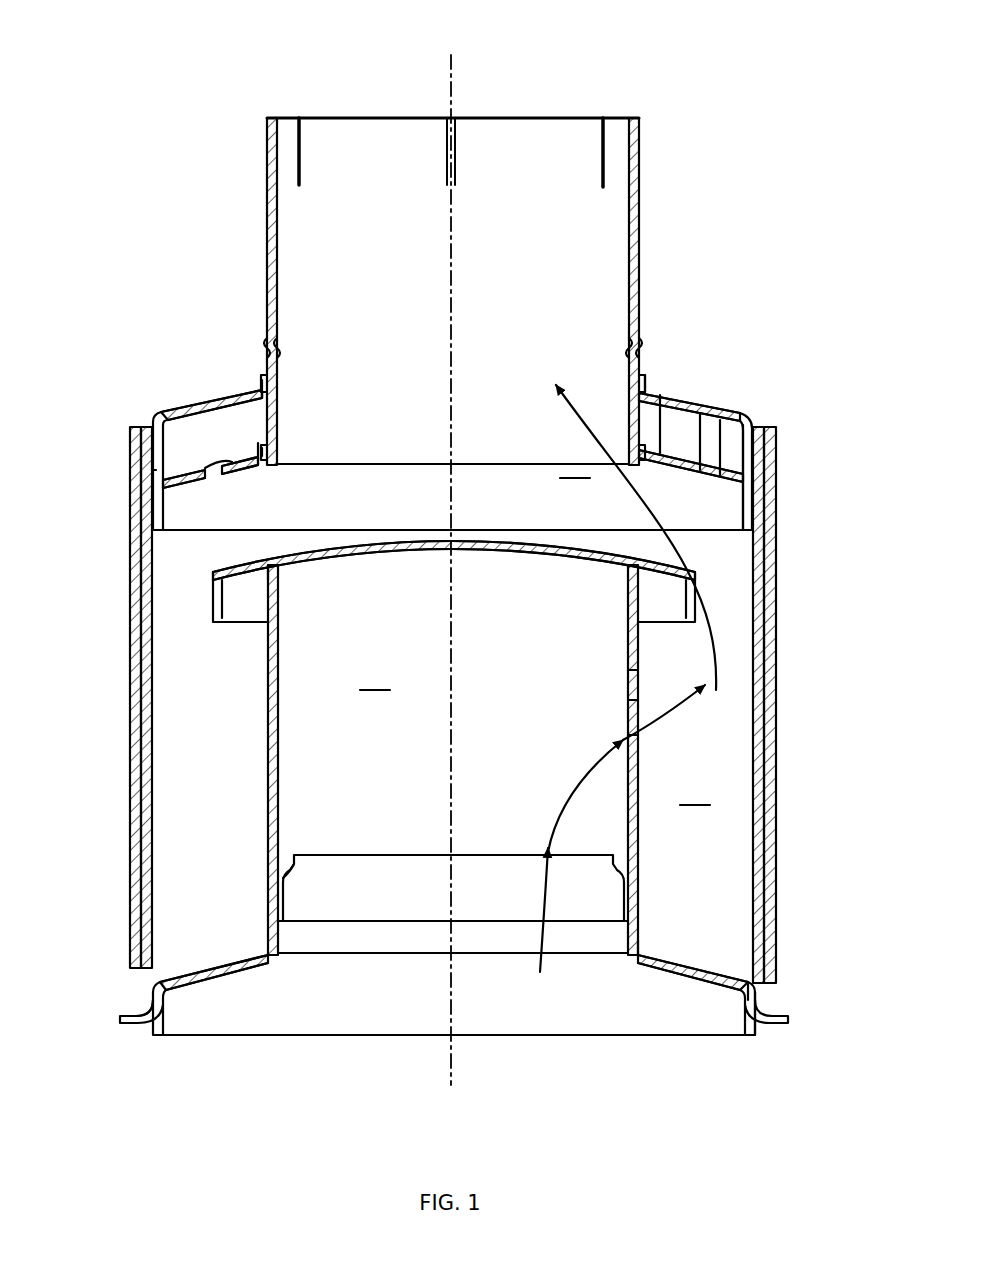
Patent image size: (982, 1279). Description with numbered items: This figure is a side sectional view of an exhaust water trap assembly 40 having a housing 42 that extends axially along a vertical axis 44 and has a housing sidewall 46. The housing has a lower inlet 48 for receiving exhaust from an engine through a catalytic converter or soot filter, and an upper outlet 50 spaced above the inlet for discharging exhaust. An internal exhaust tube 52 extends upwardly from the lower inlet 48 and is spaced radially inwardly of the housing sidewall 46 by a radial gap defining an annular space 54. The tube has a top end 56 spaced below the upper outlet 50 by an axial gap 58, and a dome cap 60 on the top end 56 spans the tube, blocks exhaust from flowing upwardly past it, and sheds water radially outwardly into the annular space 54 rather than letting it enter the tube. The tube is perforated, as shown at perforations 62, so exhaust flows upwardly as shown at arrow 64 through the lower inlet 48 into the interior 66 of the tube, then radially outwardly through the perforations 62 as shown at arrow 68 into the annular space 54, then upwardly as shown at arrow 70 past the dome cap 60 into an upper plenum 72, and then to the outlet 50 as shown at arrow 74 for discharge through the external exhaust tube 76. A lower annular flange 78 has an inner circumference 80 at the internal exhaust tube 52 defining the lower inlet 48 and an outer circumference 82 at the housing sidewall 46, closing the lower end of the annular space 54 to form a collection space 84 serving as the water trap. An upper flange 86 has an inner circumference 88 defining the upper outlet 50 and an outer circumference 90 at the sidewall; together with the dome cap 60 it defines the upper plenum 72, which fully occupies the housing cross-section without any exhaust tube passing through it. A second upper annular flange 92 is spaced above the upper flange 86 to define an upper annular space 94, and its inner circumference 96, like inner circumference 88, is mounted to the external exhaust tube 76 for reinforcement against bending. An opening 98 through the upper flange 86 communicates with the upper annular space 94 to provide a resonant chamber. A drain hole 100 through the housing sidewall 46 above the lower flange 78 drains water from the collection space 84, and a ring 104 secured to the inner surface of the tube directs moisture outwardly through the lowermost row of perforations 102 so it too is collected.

The exhaust water trap assembly 40 is at (100, 403).
The housing 42 is at (165, 405).
The vertical axis 44 is at (455, 76).
The housing sidewall 46 is at (128, 712).
The lower inlet 48 is at (280, 975).
The upper outlet 50 is at (290, 468).
The internal exhaust tube 52 is at (268, 824).
The annular space 54 is at (695, 820).
The top end 56 is at (283, 566).
The axial gap 58 is at (300, 481).
The dome cap 60 is at (335, 526).
The perforations 62 is at (628, 735).
The arrow 64 is at (545, 843).
The interior 66 is at (375, 705).
The arrow 68 is at (578, 763).
The arrow 70 is at (690, 700).
The upper plenum 72 is at (575, 494).
The arrow 74 is at (555, 398).
The external exhaust tube 76 is at (642, 226).
The lower annular flange 78 is at (698, 978).
The inner circumference 80 is at (645, 948).
The outer circumference 82 is at (740, 978).
The collection space 84 is at (735, 953).
The upper flange 86 is at (725, 453).
The inner circumference 88 is at (700, 428).
The outer circumference 90 is at (752, 416).
The second upper annular flange 92 is at (665, 418).
The upper annular space 94 is at (715, 423).
The inner circumference 96 is at (650, 378).
The opening 98 is at (205, 462).
The drain hole 100 is at (148, 973).
The lowermost row of perforations 102 is at (278, 872).
The ring 104 is at (300, 873).